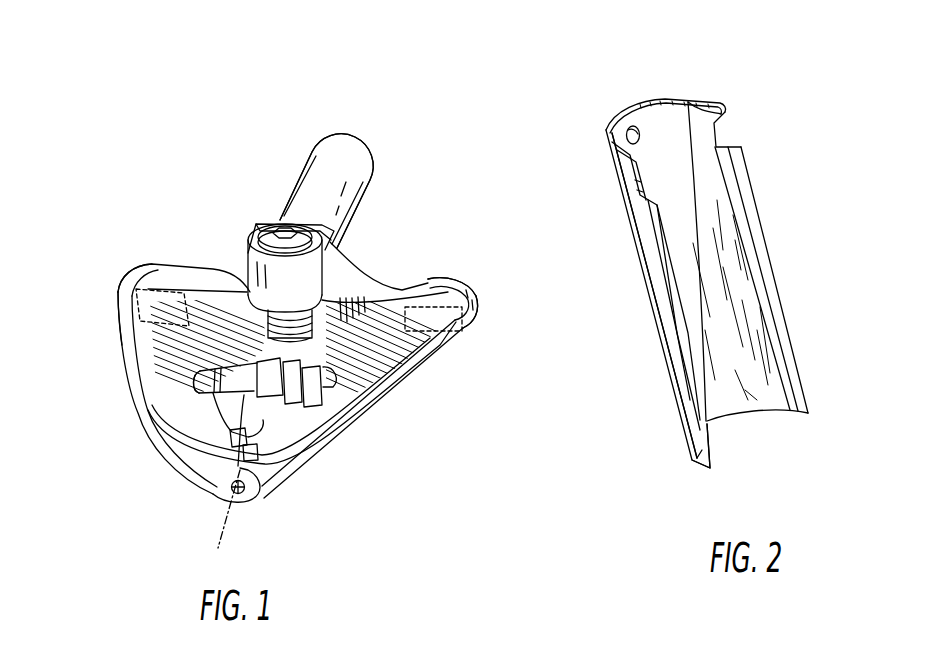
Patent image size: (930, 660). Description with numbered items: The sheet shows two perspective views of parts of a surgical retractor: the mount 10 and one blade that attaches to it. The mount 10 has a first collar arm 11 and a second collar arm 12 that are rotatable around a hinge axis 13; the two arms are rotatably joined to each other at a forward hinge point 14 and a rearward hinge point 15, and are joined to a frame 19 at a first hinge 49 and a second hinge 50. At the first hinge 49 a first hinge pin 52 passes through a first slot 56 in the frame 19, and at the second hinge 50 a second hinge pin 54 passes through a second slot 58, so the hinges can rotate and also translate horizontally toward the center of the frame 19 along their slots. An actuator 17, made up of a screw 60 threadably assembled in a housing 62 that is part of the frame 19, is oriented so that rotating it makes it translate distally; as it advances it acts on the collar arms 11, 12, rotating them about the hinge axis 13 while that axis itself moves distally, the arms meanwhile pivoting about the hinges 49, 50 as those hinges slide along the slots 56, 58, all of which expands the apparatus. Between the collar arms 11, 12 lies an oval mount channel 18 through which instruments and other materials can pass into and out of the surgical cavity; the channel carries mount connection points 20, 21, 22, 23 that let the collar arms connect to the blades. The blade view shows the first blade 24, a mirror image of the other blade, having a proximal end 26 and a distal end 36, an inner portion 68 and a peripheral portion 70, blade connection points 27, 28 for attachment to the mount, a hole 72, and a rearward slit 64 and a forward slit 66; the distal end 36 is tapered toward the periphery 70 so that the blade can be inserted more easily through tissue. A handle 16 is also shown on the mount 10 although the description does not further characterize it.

In FIG. 1, the mount 10 is at (408, 144).
In FIG. 1, the first collar arm 11 is at (160, 325).
In FIG. 1, the second collar arm 12 is at (388, 348).
In FIG. 1, the hinge axis 13 is at (225, 533).
In FIG. 1, the forward hinge point 14 is at (227, 493).
In FIG. 1, the rearward hinge point 15 is at (245, 372).
In FIG. 1, the handle 16 is at (347, 188).
In FIG. 1, the actuator 17 is at (271, 212).
In FIG. 1, the mount channel 18 is at (233, 410).
In FIG. 1, the frame 19 is at (366, 281).
In FIG. 1, the mount connection point 20 is at (328, 420).
In FIG. 1, the mount connection point 21 is at (340, 405).
In FIG. 1, the mount connection point 22 is at (265, 396).
In FIG. 1, the mount connection point 23 is at (255, 410).
In FIG. 2, the first blade 24 is at (716, 62).
In FIG. 2, the proximal end 26 is at (635, 103).
In FIG. 2, the blade connection point 27 is at (730, 133).
In FIG. 2, the blade connection point 28 is at (638, 197).
In FIG. 2, the distal end 36 is at (700, 463).
In FIG. 1, the first hinge 49 is at (161, 252).
In FIG. 1, the second hinge 50 is at (455, 265).
In FIG. 1, the first hinge pin 52 is at (157, 264).
In FIG. 1, the second hinge pin 54 is at (458, 280).
In FIG. 1, the first slot 56 is at (128, 284).
In FIG. 1, the second slot 58 is at (458, 342).
In FIG. 1, the screw 60 is at (252, 246).
In FIG. 1, the housing 62 is at (310, 306).
In FIG. 2, the rearward slit 64 is at (720, 100).
In FIG. 2, the forward slit 66 is at (645, 280).
In FIG. 2, the inner portion 68 is at (738, 364).
In FIG. 2, the peripheral portion 70 is at (643, 359).
In FIG. 2, the hole 72 is at (637, 147).